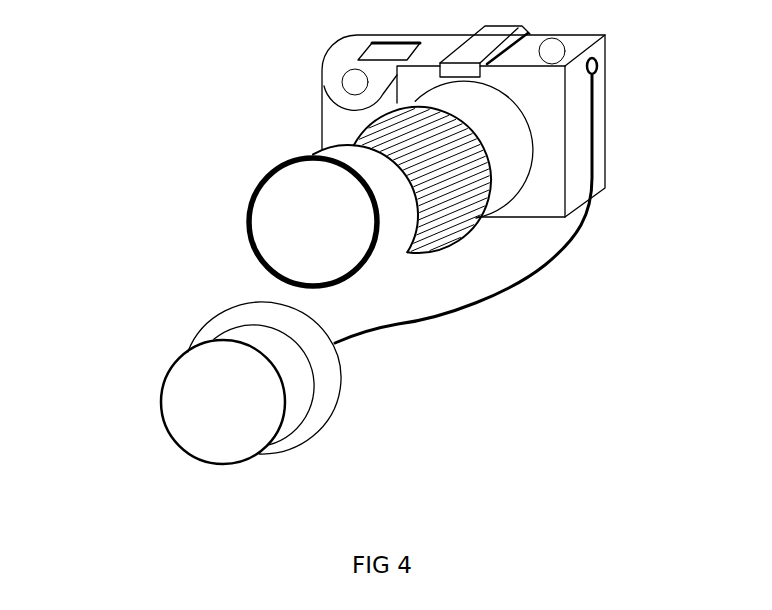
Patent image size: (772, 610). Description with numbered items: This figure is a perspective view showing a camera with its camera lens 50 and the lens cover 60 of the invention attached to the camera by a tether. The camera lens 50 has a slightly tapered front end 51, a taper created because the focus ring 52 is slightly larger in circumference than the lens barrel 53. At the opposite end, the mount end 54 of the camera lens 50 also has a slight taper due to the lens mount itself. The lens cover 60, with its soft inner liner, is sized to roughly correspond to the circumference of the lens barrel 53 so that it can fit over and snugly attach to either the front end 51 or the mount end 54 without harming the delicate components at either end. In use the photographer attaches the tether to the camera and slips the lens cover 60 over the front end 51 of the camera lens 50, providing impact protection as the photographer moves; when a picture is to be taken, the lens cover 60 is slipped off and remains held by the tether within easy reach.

The camera lens 50 is at (417, 210).
The front end 51 is at (378, 238).
The focus ring 52 is at (445, 188).
The lens barrel 53 is at (508, 176).
The mount end 54 is at (536, 135).
The lens cover 60 is at (152, 407).